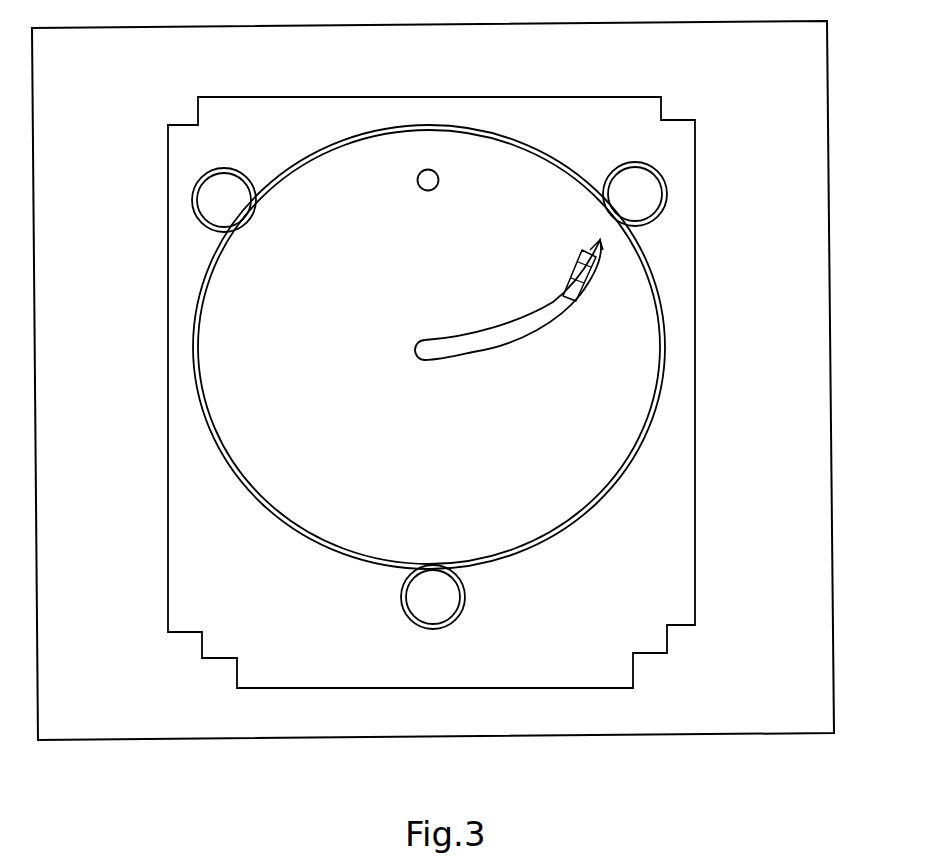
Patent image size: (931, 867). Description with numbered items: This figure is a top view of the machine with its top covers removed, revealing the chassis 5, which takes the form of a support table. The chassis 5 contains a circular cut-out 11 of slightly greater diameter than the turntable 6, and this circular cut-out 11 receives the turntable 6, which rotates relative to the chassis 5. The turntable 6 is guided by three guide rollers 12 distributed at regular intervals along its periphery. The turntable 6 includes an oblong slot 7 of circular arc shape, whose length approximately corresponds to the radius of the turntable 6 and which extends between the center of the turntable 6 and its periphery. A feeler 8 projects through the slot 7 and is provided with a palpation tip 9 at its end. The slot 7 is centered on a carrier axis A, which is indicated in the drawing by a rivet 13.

The chassis 5 is at (660, 556).
The turntable 6 is at (543, 513).
The oblong slot 7 is at (465, 343).
The feeler 8 is at (585, 290).
The palpation tip 9 is at (598, 238).
The circular cut-out 11 is at (297, 530).
The guide rollers 12 is at (222, 195).
The rivet 13 is at (428, 185).